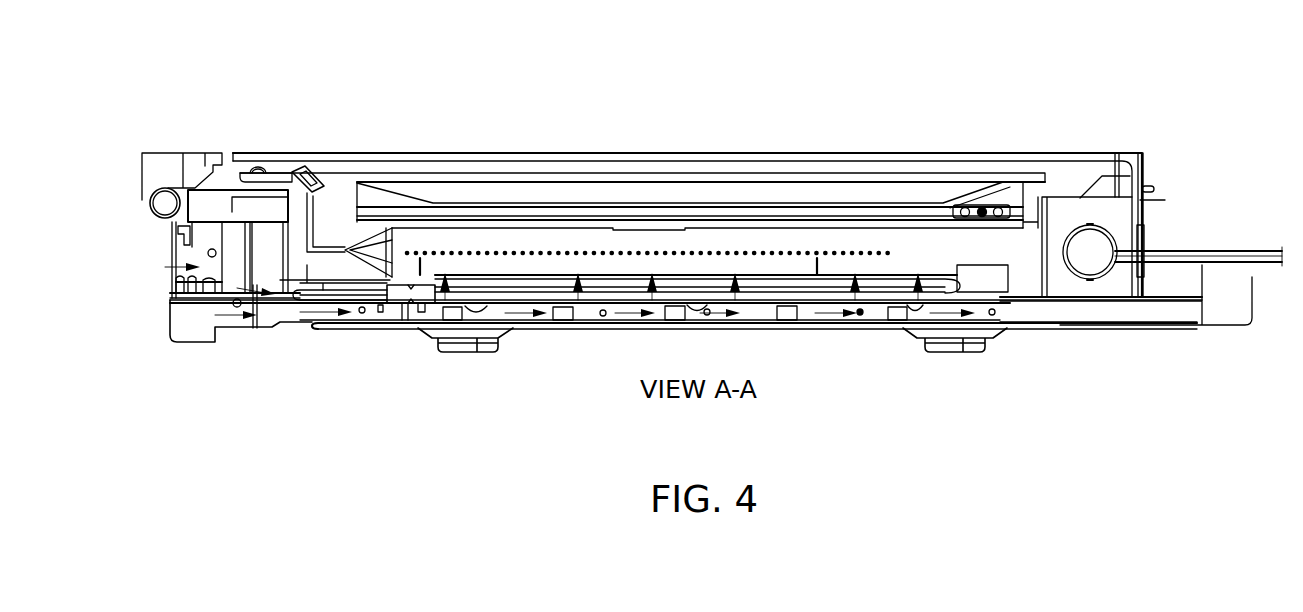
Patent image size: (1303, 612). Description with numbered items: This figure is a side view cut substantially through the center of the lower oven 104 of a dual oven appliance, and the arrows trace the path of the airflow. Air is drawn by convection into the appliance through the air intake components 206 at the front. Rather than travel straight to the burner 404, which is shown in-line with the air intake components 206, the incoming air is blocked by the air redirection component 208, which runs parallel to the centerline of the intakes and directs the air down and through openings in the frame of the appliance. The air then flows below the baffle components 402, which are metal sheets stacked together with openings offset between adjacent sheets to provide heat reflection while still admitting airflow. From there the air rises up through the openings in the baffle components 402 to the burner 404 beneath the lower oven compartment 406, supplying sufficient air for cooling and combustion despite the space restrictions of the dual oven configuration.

The lower oven 104 is at (1060, 96).
The air intake components 206 is at (180, 268).
The air redirection component 208 is at (297, 248).
The baffle components 402 is at (480, 294).
The burner 404 is at (853, 240).
The lower oven compartment 406 is at (585, 193).